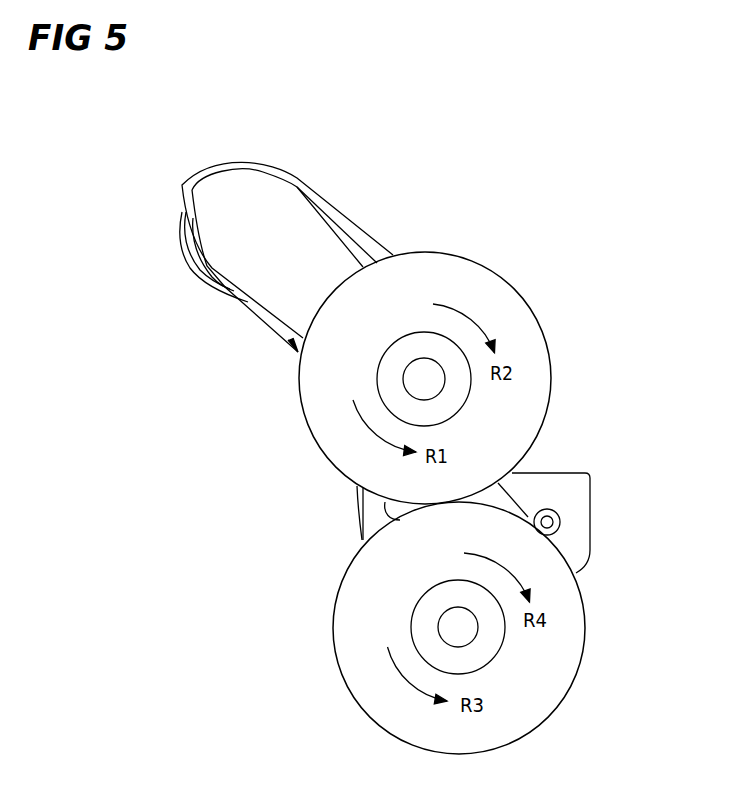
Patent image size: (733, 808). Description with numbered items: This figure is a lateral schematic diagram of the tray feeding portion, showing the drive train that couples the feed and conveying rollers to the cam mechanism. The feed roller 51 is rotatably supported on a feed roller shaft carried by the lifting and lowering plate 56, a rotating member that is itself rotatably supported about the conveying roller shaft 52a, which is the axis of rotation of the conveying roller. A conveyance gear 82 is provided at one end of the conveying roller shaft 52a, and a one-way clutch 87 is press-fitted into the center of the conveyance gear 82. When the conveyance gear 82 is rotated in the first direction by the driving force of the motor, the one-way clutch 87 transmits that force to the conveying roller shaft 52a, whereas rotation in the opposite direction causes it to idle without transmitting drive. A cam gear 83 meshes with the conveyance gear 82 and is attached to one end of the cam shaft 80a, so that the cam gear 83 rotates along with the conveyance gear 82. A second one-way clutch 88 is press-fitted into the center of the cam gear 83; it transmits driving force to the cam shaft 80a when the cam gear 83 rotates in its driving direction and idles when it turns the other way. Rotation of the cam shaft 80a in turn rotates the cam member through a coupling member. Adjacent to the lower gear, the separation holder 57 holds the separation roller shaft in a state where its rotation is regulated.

The feed roller 51 is at (176, 226).
The lifting and lowering plate 56 is at (260, 192).
The conveyance gear 82 is at (490, 288).
The one-way clutch 87 is at (390, 372).
The conveying roller shaft 52a is at (427, 385).
The separation holder 57 is at (575, 517).
The cam gear 83 is at (562, 658).
The one-way clutch 88 is at (492, 653).
The cam shaft 80a is at (447, 620).